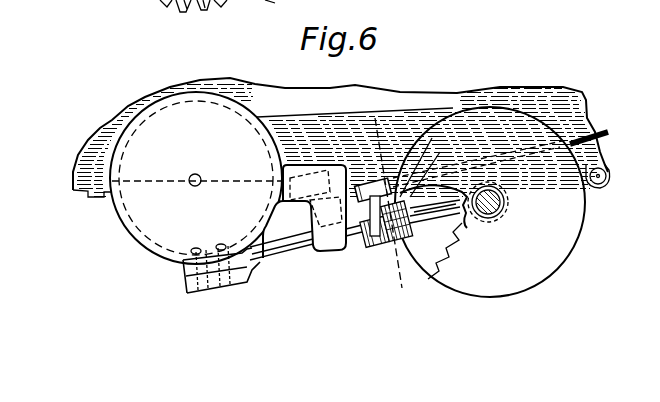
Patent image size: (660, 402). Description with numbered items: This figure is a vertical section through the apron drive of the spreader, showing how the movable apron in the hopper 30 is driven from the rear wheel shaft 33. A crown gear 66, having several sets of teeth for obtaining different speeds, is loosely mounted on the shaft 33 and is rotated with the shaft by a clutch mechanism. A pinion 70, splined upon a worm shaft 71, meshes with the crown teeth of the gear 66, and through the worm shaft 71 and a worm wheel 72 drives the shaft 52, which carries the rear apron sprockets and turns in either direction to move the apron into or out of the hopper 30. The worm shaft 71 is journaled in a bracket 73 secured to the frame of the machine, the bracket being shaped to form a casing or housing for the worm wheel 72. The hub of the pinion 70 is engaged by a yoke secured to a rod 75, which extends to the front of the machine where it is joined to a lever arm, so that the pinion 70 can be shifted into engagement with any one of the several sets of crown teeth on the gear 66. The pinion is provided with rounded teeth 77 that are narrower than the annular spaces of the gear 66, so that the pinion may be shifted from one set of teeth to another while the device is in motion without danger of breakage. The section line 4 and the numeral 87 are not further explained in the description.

The hopper 30 is at (92, 163).
The bracket 73 is at (167, 266).
The worm wheel 72 is at (148, 255).
The shaft 52 is at (192, 185).
The crown gear 66 is at (504, 280).
The shaft 33 is at (505, 205).
The spring 87 is at (466, 229).
The worm shaft 71 is at (237, 288).
The pinion 70 is at (406, 243).
The rounded teeth 77 is at (358, 183).
The section line 4- 4 is at (383, 121).
The rod 75 is at (602, 128).